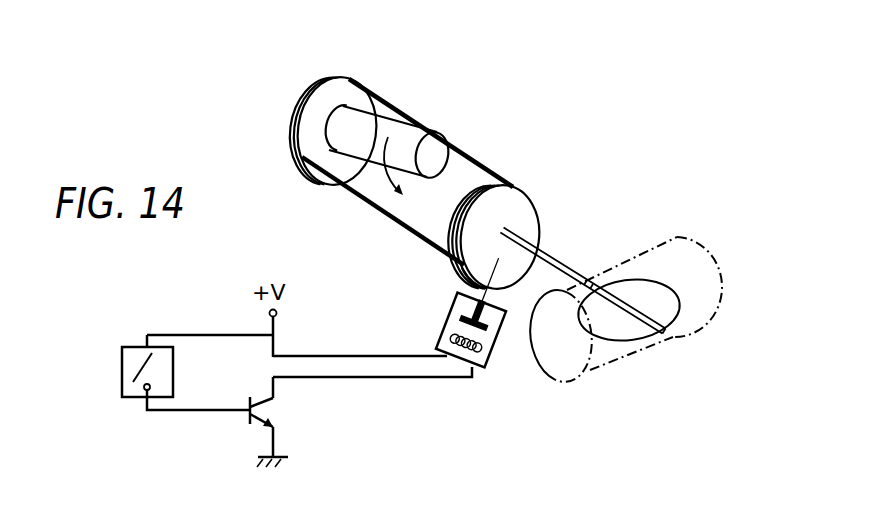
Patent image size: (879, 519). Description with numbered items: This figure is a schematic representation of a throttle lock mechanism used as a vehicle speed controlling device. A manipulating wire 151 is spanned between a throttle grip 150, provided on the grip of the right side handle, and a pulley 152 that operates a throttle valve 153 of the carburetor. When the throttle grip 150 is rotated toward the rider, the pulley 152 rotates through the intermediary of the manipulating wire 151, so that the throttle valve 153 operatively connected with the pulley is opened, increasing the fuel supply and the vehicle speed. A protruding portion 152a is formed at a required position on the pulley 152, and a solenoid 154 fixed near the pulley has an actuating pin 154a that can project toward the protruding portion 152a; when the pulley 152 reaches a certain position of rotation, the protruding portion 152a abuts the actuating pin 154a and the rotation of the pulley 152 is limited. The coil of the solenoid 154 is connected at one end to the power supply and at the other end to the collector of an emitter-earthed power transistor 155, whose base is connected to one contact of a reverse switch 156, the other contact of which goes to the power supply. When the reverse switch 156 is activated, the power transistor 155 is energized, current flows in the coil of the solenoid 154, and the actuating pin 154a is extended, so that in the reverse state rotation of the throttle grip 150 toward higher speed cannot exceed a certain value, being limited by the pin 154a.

The throttle grip 150 is at (410, 135).
The manipulating wire 151 is at (472, 150).
The pulley 152 is at (527, 211).
The protruding portion 152a is at (476, 281).
The throttle valve 153 is at (632, 327).
The solenoid 154 is at (492, 353).
The actuating pin 154a is at (489, 302).
The power transistor 155 is at (248, 418).
The reverse switch 156 is at (122, 368).